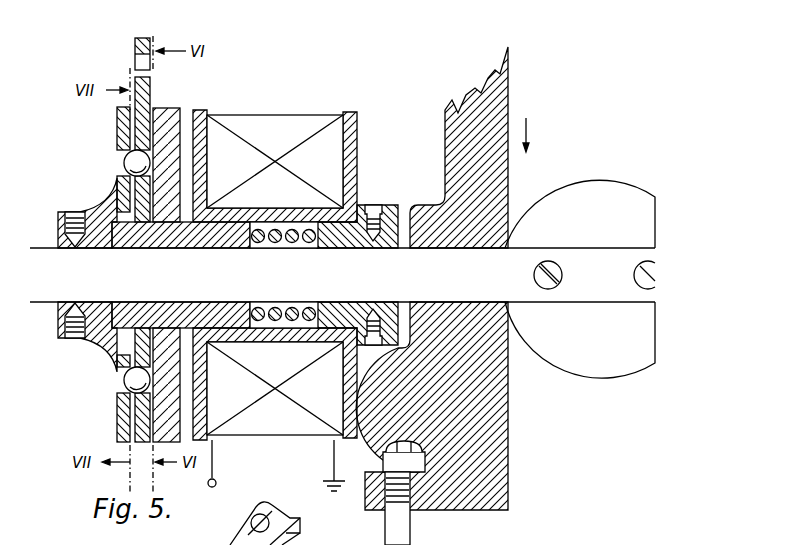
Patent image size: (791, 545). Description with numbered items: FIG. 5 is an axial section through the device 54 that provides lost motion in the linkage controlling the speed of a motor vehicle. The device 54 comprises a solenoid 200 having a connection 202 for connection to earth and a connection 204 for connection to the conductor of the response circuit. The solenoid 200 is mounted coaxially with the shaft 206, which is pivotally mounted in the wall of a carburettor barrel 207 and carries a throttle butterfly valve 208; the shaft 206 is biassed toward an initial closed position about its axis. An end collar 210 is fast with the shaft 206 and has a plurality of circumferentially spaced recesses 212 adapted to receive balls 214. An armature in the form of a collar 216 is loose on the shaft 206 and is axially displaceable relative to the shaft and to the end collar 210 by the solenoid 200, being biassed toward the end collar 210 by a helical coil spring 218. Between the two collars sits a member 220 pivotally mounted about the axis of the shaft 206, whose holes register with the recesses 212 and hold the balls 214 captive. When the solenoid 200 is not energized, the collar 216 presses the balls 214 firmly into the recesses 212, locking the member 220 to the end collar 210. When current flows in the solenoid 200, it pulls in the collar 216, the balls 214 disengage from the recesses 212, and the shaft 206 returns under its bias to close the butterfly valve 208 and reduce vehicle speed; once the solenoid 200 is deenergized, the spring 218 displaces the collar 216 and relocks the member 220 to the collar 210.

The device for providing lost motion 54 is at (337, 78).
The solenoid 200 is at (271, 113).
The earth connection 202 is at (334, 462).
The conductor connection 204 is at (212, 462).
The shaft 206 is at (342, 275).
The carburettor barrel 207 is at (512, 441).
The throttle butterfly valve 208 is at (573, 184).
The end collar 210 is at (86, 338).
The recesses 212 is at (110, 172).
The balls 214 is at (127, 160).
The armature collar 216 is at (180, 116).
The helical coil spring 218 is at (303, 318).
The pivotally mounted member 220 is at (150, 96).